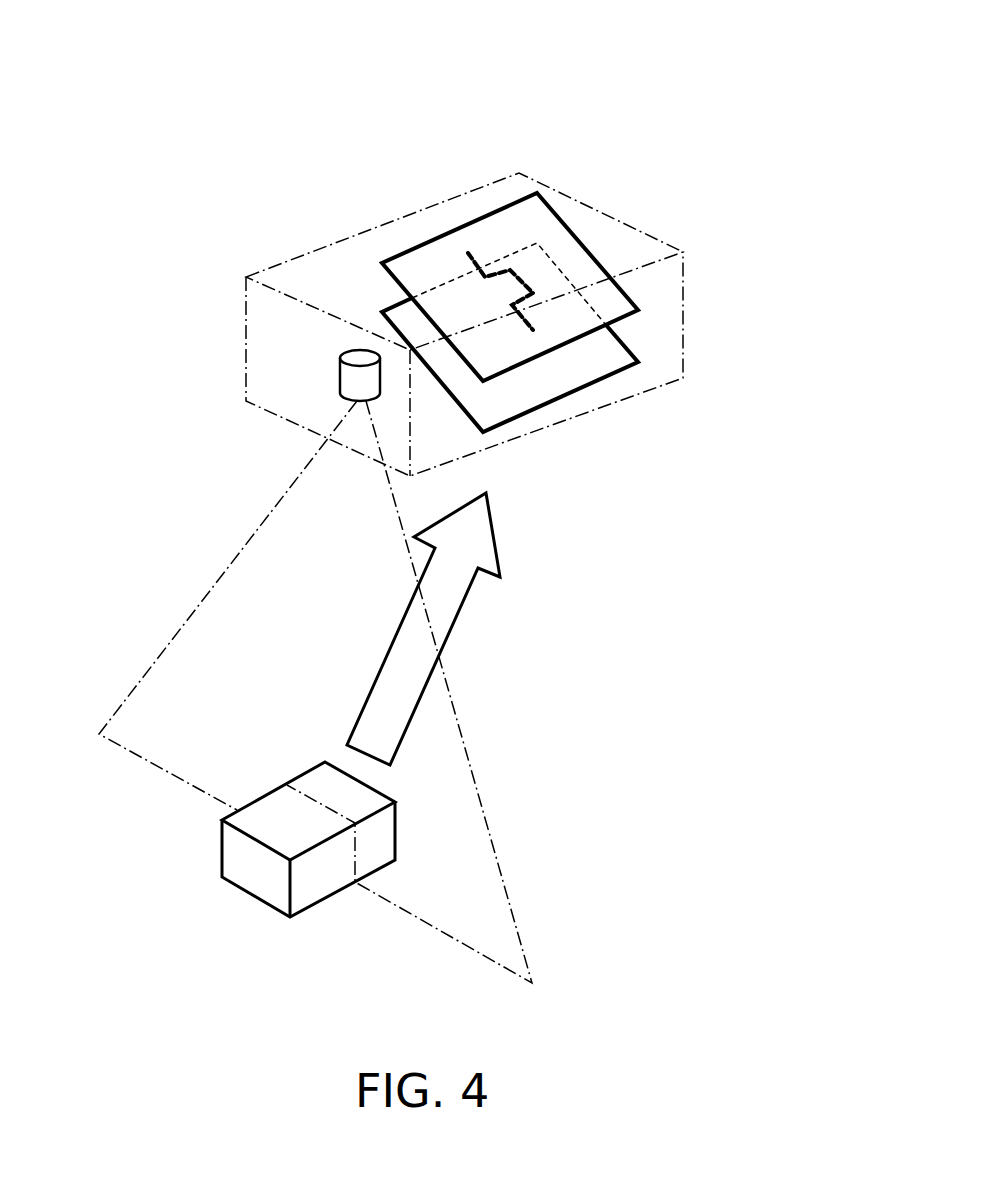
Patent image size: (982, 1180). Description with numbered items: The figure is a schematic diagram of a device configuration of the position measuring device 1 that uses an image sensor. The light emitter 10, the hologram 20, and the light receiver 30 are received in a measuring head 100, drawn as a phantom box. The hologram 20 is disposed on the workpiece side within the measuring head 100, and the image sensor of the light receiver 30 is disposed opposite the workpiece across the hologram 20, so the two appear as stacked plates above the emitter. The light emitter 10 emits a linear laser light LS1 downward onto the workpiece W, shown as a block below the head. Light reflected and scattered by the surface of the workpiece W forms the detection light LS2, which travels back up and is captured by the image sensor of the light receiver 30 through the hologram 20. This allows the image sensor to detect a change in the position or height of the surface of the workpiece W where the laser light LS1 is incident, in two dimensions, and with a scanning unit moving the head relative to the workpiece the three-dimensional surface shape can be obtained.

The position measuring device 1 is at (610, 110).
The light emitter 10 is at (350, 383).
The hologram 20 is at (403, 323).
The light receiver 30 is at (440, 265).
The measuring head 100 is at (683, 295).
The laser light LS1 is at (258, 523).
The detection light LS2 is at (445, 598).
The workpiece W is at (237, 855).